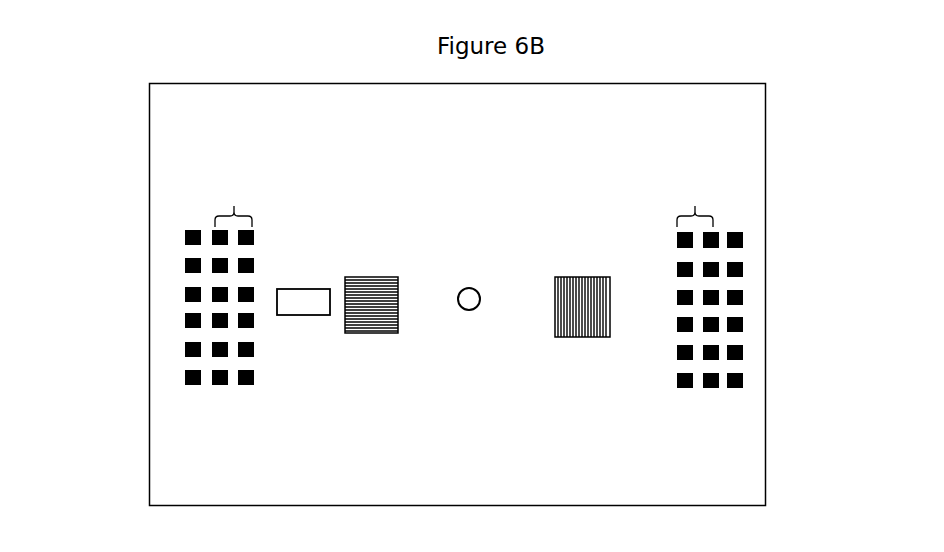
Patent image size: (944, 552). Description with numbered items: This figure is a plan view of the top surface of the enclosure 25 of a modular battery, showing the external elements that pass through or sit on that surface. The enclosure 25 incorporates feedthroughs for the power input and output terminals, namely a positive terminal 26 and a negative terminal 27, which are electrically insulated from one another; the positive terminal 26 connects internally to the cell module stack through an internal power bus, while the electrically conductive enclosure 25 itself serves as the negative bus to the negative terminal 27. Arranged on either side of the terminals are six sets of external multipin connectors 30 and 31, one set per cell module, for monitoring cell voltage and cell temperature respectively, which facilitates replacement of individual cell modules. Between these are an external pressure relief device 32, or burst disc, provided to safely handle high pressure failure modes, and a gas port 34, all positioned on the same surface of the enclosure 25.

The enclosure 25 is at (765, 457).
The positive terminal 26 is at (387, 277).
The negative terminal 27 is at (595, 275).
The multipin connector 30 is at (189, 225).
The multipin connector 31 is at (464, 197).
The pressure relief device 32 is at (310, 285).
The gas port 34 is at (478, 282).